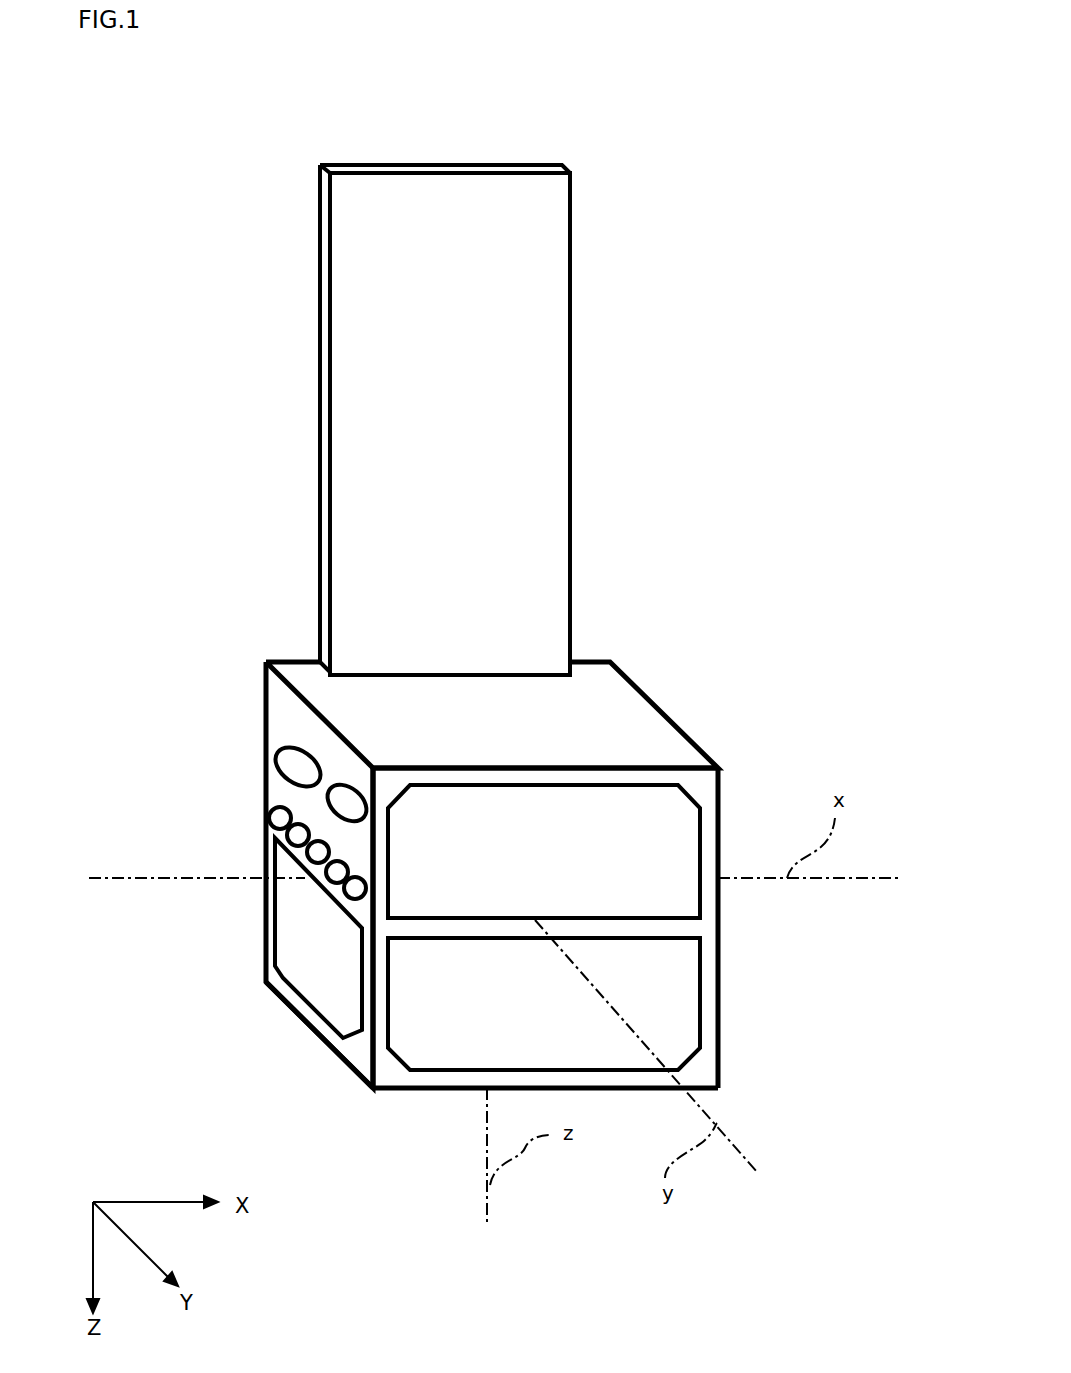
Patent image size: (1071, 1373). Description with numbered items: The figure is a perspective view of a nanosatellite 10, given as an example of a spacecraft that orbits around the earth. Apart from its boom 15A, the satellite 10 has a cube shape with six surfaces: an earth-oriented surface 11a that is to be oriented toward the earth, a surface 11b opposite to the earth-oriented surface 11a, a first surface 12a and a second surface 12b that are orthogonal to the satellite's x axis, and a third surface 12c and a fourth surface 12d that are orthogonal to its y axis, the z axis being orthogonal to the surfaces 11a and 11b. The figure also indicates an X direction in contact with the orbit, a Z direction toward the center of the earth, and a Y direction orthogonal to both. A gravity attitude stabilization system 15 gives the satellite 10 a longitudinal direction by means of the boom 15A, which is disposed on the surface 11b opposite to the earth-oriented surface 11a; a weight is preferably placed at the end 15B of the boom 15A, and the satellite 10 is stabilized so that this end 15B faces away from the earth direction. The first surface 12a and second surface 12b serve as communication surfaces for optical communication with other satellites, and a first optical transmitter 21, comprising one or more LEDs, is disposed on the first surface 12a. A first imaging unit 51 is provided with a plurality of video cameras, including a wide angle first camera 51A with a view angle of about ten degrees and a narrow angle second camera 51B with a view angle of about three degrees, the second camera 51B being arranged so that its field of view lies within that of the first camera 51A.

The nanosatellite 10 is at (692, 198).
The gravity attitude stabilization system 15 is at (575, 178).
The boom 15A is at (353, 298).
The end of the boom 15B is at (422, 162).
The earth-oriented surface 11a is at (410, 1088).
The surface opposite to the earth-oriented surface 11b is at (640, 708).
The first surface 12a is at (362, 1057).
The second surface 12b is at (720, 1055).
The third surface 12c is at (710, 963).
The fourth surface 12d is at (262, 705).
The first optical transmitter 21 is at (279, 835).
The first imaging unit 51 is at (132, 725).
The first camera 51A is at (290, 767).
The second camera 51B is at (340, 803).